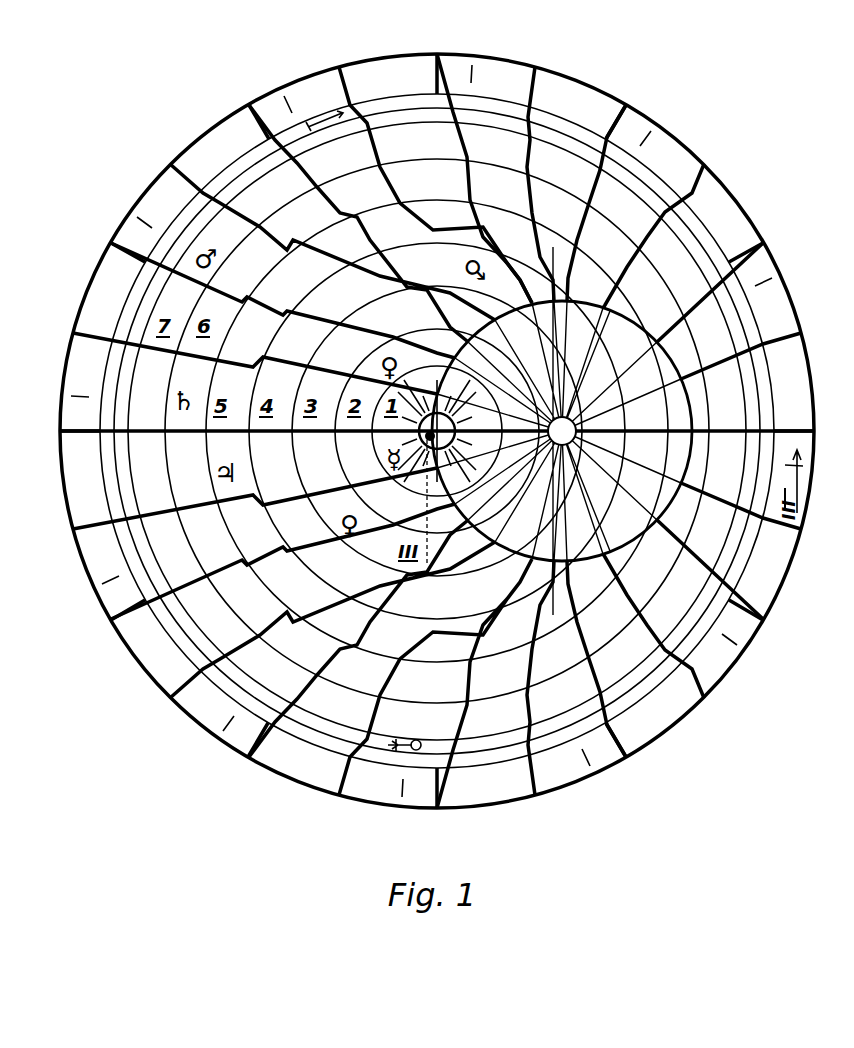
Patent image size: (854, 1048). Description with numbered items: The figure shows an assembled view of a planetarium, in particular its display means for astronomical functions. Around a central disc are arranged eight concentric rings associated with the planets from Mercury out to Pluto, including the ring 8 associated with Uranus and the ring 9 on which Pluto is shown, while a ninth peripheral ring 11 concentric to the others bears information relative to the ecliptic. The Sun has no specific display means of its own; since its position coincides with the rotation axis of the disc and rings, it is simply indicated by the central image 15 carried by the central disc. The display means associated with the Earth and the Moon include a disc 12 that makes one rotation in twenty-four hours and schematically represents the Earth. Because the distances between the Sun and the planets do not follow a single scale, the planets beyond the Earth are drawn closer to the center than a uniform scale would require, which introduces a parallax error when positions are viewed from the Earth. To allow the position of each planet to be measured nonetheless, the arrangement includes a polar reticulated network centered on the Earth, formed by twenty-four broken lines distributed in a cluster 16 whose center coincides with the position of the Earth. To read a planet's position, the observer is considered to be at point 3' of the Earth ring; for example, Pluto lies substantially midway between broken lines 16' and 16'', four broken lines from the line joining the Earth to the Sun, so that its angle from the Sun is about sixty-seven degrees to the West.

The point of ring 3 3' is at (562, 431).
The ring 8 is at (190, 233).
The ring 9 is at (163, 250).
The peripheral ring 11 is at (102, 285).
The disc 12 is at (683, 257).
The central image 15 is at (430, 353).
The cluster of broken lines 16 is at (437, 431).
The broken line 16' is at (437, 423).
The broken line 16'' is at (425, 152).